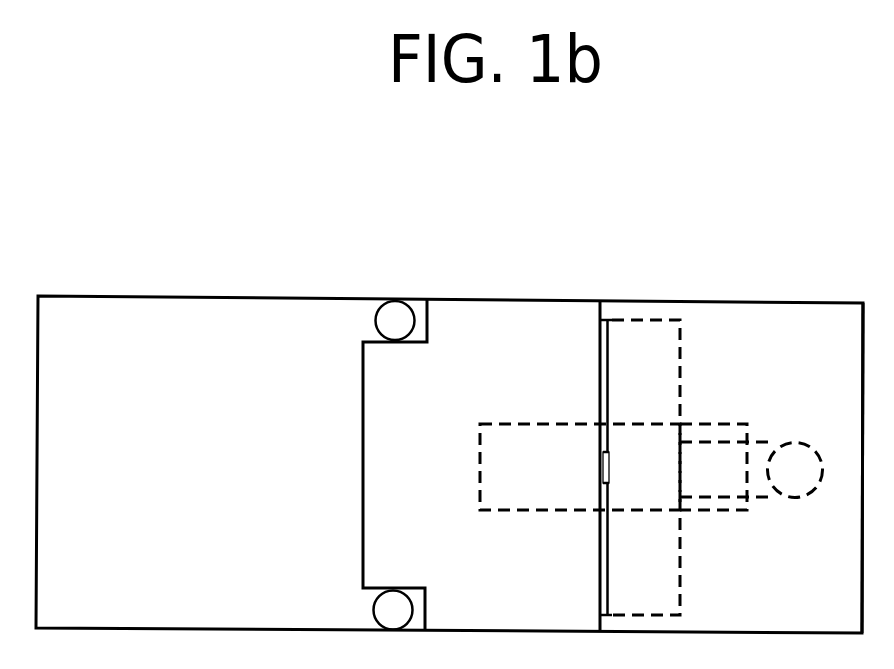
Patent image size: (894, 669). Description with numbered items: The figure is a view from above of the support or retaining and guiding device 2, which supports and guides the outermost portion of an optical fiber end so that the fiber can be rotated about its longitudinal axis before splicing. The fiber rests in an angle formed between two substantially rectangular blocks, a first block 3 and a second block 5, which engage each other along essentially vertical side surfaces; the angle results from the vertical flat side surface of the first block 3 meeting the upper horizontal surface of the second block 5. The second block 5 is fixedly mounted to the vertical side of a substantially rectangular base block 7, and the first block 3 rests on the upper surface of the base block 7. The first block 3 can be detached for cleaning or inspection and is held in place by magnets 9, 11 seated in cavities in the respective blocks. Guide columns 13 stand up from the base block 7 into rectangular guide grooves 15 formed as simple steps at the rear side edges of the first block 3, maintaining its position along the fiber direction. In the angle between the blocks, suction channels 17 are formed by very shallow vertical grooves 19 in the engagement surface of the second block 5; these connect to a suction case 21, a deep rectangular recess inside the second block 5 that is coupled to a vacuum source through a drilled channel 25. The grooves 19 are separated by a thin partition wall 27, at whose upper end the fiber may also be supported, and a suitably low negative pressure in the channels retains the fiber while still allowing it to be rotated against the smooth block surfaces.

The support or retaining and guiding device 2 is at (297, 240).
The first block 3 is at (512, 316).
The second block 5 is at (827, 327).
The base block 7 is at (171, 316).
The magnet 9 is at (506, 432).
The magnet 11 is at (719, 503).
The guide column 13 is at (383, 321).
The guide groove 15 is at (412, 345).
The suction channel 17 is at (601, 381).
The groove 19 is at (601, 575).
The suction case 21 is at (668, 350).
The channel 25 is at (818, 485).
The partition wall 27 is at (604, 478).